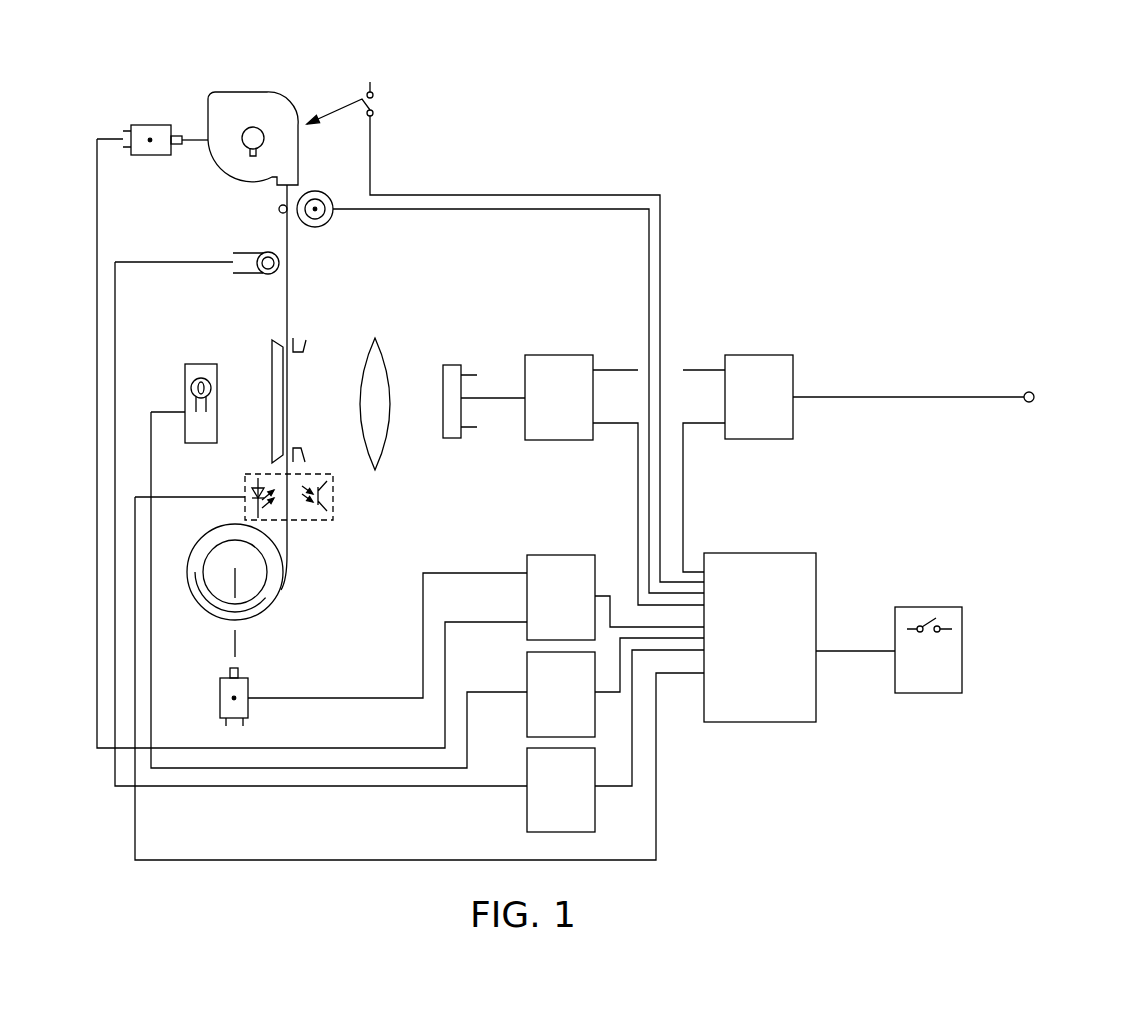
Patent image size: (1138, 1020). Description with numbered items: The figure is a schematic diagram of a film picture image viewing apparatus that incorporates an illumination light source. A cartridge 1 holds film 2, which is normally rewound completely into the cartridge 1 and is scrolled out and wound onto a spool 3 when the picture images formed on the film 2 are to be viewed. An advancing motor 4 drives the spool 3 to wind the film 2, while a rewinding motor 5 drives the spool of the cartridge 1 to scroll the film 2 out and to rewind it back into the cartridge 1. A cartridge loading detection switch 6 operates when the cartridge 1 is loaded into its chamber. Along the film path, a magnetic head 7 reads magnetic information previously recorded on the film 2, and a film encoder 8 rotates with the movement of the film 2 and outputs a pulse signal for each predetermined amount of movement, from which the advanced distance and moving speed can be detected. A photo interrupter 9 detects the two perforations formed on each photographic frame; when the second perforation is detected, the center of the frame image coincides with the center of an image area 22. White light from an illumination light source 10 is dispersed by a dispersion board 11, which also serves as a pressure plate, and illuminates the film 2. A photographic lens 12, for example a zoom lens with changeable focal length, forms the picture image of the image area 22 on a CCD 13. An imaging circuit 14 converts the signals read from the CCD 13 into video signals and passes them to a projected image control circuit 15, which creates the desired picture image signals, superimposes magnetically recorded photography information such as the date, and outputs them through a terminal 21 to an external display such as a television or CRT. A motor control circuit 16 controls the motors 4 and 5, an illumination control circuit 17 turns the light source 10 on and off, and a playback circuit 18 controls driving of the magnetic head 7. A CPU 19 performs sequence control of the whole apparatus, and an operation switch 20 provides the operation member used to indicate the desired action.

The cartridge 1 is at (243, 92).
The film 2 is at (288, 546).
The spool 3 is at (215, 545).
The advancing motor 4 is at (248, 710).
The rewinding motor 5 is at (150, 125).
The cartridge loading detection switch 6 is at (375, 112).
The magnetic head 7 is at (266, 252).
The film encoder 8 is at (326, 224).
The photo interrupter 9 is at (333, 497).
The illumination light source 10 is at (186, 378).
The dispersion board 11 is at (270, 364).
The photographic lens 12 is at (387, 443).
The CCD 13 is at (462, 368).
The imaging circuit 14 is at (578, 355).
The projected image control circuit 15 is at (780, 350).
The motor control circuit 16 is at (555, 555).
The illumination control circuit 17 is at (527, 665).
The playback circuit 18 is at (527, 805).
The CPU 19 is at (817, 575).
The operation switch 20 is at (962, 622).
The terminal 21 is at (1032, 392).
The image area 22 is at (322, 358).